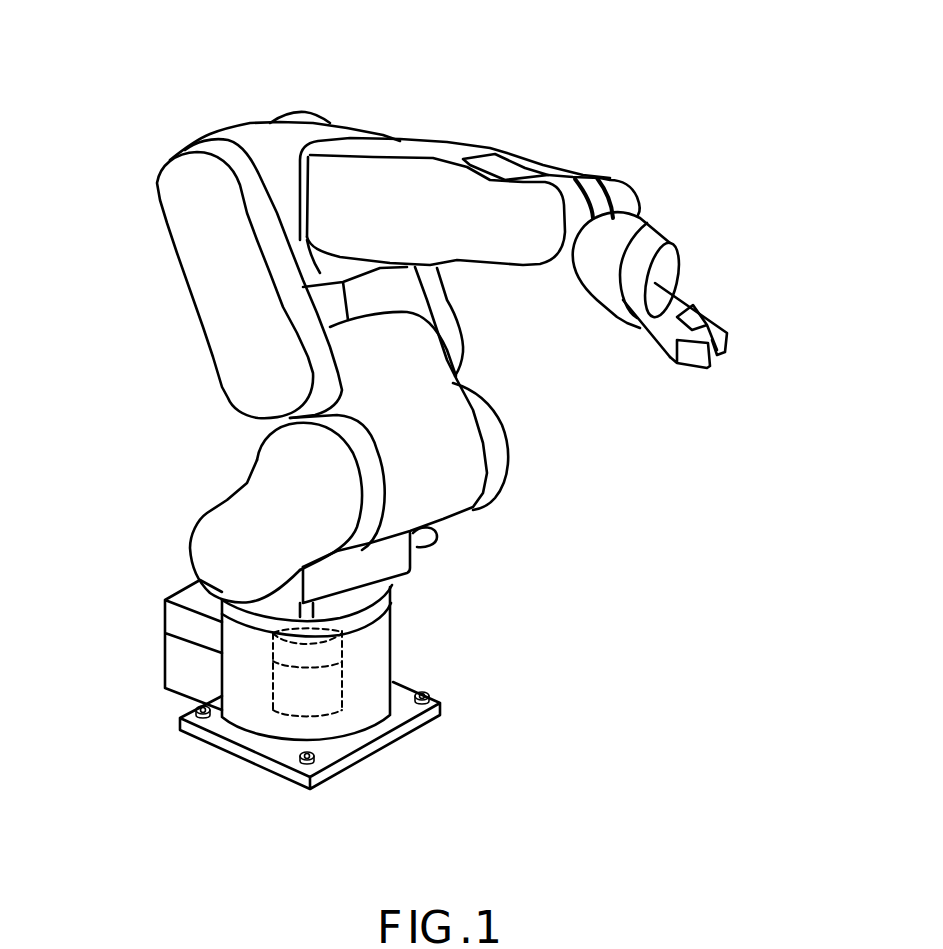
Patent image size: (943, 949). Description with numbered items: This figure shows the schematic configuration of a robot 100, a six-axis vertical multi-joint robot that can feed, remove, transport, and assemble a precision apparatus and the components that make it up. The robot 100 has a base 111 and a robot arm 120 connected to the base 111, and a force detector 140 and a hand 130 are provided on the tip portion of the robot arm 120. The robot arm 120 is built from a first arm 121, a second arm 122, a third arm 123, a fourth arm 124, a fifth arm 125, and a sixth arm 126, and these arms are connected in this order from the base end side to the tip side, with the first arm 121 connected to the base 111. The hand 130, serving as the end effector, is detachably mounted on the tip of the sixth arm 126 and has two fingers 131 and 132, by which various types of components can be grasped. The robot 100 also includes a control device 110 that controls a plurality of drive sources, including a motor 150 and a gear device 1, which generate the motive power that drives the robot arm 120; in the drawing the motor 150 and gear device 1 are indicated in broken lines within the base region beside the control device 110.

The robot 100 is at (525, 110).
The control device 110 is at (177, 658).
The base 111 is at (332, 728).
The robot arm 120 is at (426, 137).
The first arm 121 is at (222, 545).
The second arm 122 is at (225, 297).
The third arm 123 is at (260, 140).
The fourth arm 124 is at (333, 197).
The fifth arm 125 is at (600, 193).
The sixth arm 126 is at (623, 230).
The hand 130 is at (698, 302).
The finger 131 is at (728, 345).
The finger 132 is at (695, 362).
The force detector 140 is at (647, 252).
The motor 150 is at (343, 676).
The gear device 1 is at (410, 617).